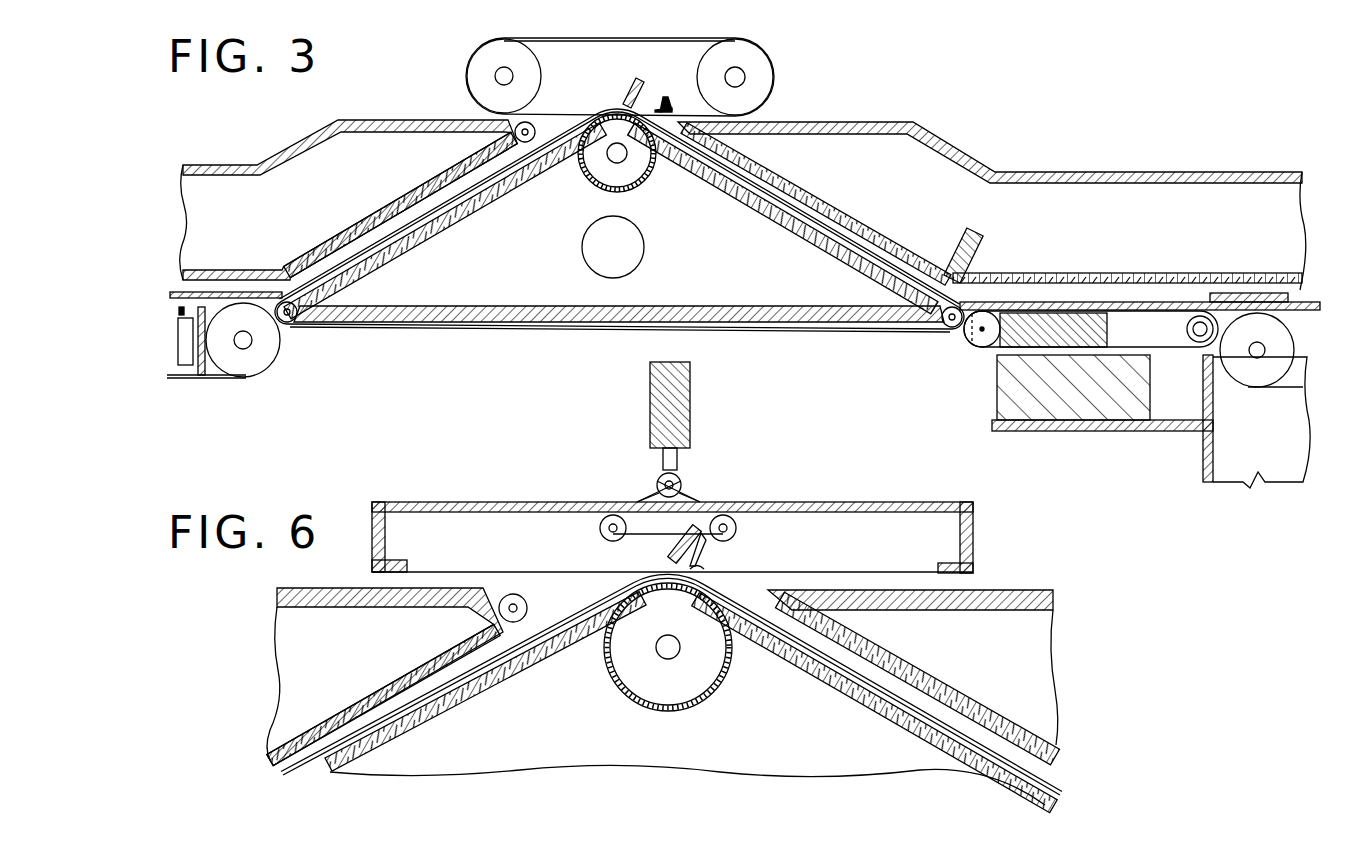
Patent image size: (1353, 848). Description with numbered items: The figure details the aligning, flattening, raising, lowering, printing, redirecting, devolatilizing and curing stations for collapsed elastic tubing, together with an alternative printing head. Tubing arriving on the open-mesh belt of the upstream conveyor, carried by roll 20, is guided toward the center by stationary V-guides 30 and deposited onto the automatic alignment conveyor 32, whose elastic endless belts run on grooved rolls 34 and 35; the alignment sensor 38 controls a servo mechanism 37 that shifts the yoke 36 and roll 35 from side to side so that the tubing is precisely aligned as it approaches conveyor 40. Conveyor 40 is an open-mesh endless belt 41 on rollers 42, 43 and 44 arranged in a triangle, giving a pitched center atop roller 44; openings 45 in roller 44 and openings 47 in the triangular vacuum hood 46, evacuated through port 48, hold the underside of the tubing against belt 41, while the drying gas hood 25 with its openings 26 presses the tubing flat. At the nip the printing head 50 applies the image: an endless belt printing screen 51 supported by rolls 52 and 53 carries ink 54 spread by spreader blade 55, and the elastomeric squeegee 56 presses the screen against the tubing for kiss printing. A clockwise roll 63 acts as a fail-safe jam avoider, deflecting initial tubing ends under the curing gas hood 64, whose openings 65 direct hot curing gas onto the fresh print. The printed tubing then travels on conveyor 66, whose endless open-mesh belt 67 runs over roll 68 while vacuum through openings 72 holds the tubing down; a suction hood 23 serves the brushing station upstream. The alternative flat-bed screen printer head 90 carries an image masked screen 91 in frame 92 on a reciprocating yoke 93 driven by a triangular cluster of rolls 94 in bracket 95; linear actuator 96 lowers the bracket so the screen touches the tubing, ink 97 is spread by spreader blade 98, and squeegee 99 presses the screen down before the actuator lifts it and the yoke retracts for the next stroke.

In FIG. 3, the roll 20 is at (1296, 355).
In FIG. 3, the suction hood 23 is at (1188, 355).
In FIG. 6, the drying gas hood 25 is at (1028, 663).
In FIG. 6, the openings 26 is at (1040, 725).
In FIG. 3, the "V"-guides 30 is at (1292, 300).
In FIG. 3, the automatic alignment conveyor 32 is at (1162, 352).
In FIG. 3, the roll 34 is at (1187, 331).
In FIG. 3, the roll 35 is at (968, 338).
In FIG. 3, the yoke 36 is at (1000, 345).
In FIG. 3, the servo mechanism 37 is at (1000, 385).
In FIG. 3, the alignment sensor 38 is at (980, 230).
In FIG. 3, the conveyor 40 is at (619, 221).
In FIG. 3, the open-mesh endless belt 41 is at (728, 324).
In FIG. 3, the roller 42 is at (293, 322).
In FIG. 3, the roller 43 is at (947, 325).
In FIG. 3, the roller 44 is at (613, 116).
In FIG. 6, the roller 44 is at (702, 683).
In FIG. 3, the openings 45 is at (600, 152).
In FIG. 6, the openings 45 is at (668, 712).
In FIG. 3, the triangular vacuum hood 46 is at (787, 326).
In FIG. 6, the triangular vacuum hood 46 is at (753, 740).
In FIG. 3, the openings 47 is at (905, 296).
In FIG. 6, the openings 47 is at (385, 770).
In FIG. 3, the port 48 is at (602, 270).
In FIG. 3, the printing head 50 is at (610, 40).
In FIG. 3, the endless belt printing screen 51 is at (686, 42).
In FIG. 3, the roll 52 is at (745, 52).
In FIG. 3, the roll 53 is at (498, 52).
In FIG. 3, the ink 54 is at (672, 108).
In FIG. 3, the spreader blade 55 is at (664, 100).
In FIG. 3, the elastomeric squeegee 56 is at (634, 90).
In FIG. 3, the roll 63 is at (533, 124).
In FIG. 6, the roll 63 is at (515, 592).
In FIG. 3, the curing gas hood 64 is at (372, 158).
In FIG. 6, the curing gas hood 64 is at (360, 648).
In FIG. 3, the openings 65 is at (505, 142).
In FIG. 6, the openings 65 is at (455, 648).
In FIG. 3, the conveyor 66 is at (203, 380).
In FIG. 3, the endless open-mesh conveyor belt 67 is at (232, 378).
In FIG. 3, the roll 68 is at (265, 360).
In FIG. 3, the openings 72 is at (178, 326).
In FIG. 6, the flat-bed screen printer head 90 is at (672, 523).
In FIG. 6, the image masked screen 91 is at (880, 570).
In FIG. 6, the frame 92 is at (940, 566).
In FIG. 6, the reciprocating yoke 93 is at (945, 505).
In FIG. 6, the rolls 94 is at (723, 514).
In FIG. 6, the bracket 95 is at (640, 500).
In FIG. 6, the linear actuator 96 is at (650, 422).
In FIG. 6, the ink 97 is at (705, 568).
In FIG. 6, the spreader blade 98 is at (704, 560).
In FIG. 6, the squeegee 99 is at (667, 552).